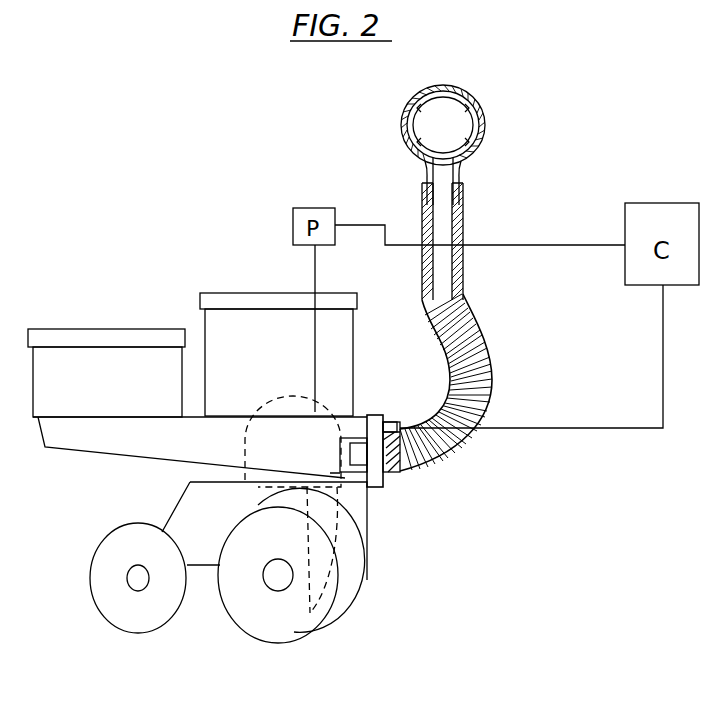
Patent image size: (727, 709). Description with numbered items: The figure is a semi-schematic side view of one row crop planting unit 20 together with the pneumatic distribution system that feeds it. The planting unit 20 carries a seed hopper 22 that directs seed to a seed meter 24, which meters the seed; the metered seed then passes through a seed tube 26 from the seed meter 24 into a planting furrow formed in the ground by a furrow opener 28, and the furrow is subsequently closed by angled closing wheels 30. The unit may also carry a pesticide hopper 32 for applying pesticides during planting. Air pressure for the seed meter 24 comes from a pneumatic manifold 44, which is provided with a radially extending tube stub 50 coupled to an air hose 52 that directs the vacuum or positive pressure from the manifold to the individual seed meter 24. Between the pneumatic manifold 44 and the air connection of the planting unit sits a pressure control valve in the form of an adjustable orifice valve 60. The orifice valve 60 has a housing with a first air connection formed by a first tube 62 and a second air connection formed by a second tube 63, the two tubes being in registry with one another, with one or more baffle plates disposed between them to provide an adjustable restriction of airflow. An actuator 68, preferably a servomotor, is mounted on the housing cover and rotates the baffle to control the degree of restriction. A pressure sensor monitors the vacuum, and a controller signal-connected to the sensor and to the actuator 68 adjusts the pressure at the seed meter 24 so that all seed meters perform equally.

The row crop planting unit 20 is at (138, 279).
The seed hopper 22 is at (225, 292).
The seed meter 24 is at (243, 437).
The seed tube 26 is at (333, 577).
The furrow opener 28 is at (293, 632).
The angled closing wheels 30 is at (128, 622).
The pesticide hopper 32 is at (50, 328).
The pneumatic manifold 44 is at (481, 112).
The tube stub 50 is at (460, 178).
The air hose 52 is at (483, 330).
The adjustable orifice valve 60 is at (380, 489).
The first tube 62 is at (413, 468).
The second tube 63 is at (345, 438).
The actuator 68 is at (398, 428).